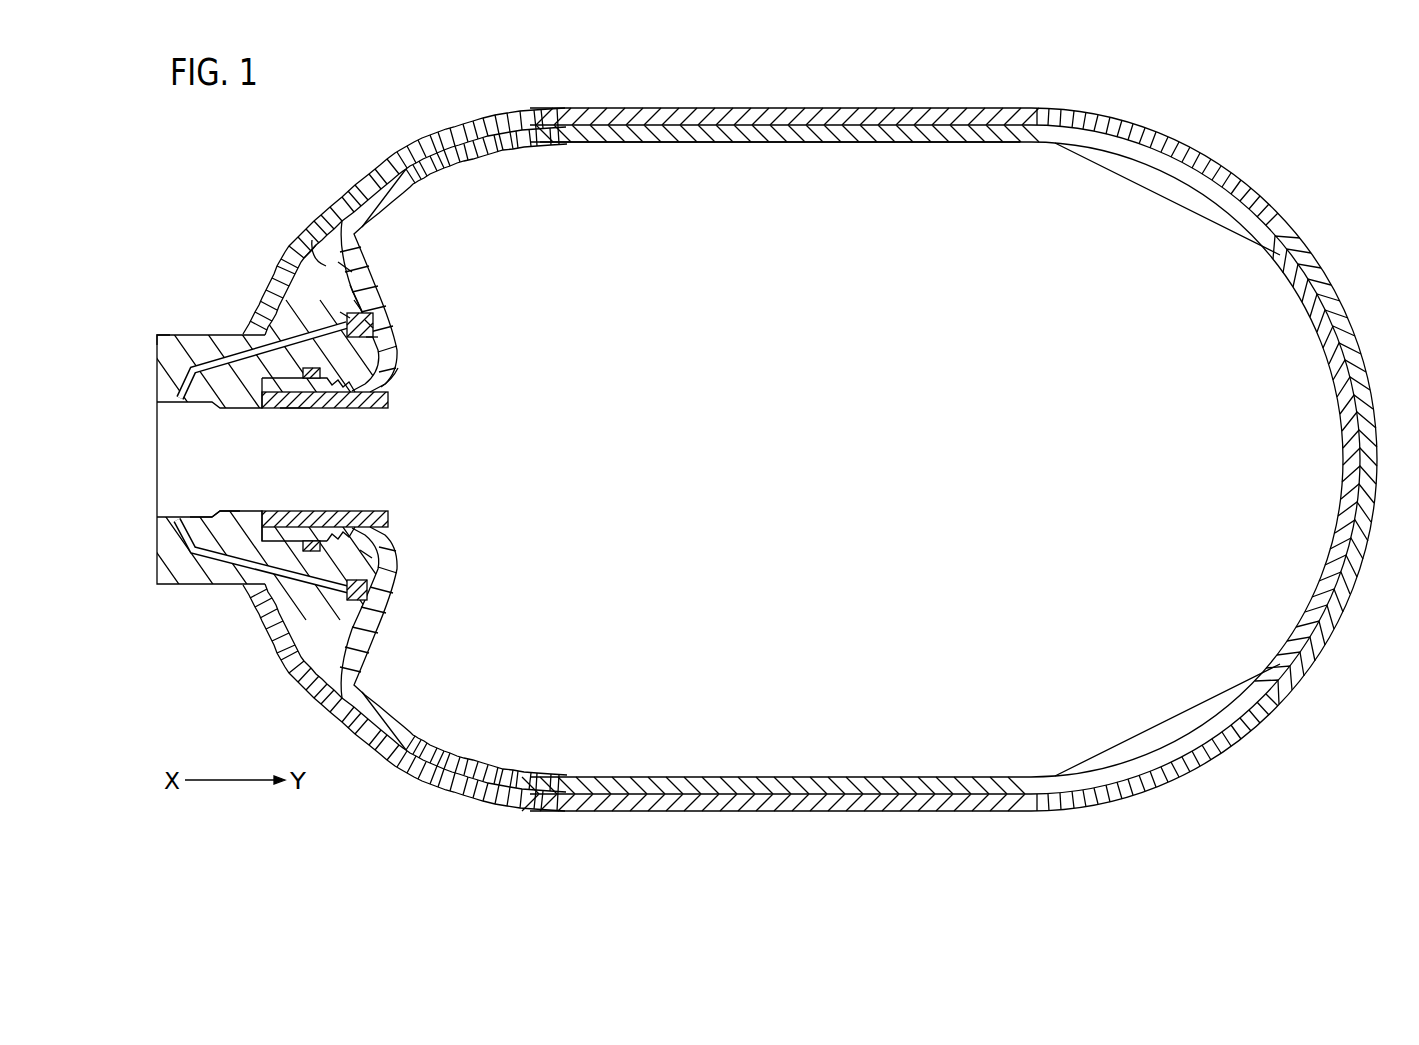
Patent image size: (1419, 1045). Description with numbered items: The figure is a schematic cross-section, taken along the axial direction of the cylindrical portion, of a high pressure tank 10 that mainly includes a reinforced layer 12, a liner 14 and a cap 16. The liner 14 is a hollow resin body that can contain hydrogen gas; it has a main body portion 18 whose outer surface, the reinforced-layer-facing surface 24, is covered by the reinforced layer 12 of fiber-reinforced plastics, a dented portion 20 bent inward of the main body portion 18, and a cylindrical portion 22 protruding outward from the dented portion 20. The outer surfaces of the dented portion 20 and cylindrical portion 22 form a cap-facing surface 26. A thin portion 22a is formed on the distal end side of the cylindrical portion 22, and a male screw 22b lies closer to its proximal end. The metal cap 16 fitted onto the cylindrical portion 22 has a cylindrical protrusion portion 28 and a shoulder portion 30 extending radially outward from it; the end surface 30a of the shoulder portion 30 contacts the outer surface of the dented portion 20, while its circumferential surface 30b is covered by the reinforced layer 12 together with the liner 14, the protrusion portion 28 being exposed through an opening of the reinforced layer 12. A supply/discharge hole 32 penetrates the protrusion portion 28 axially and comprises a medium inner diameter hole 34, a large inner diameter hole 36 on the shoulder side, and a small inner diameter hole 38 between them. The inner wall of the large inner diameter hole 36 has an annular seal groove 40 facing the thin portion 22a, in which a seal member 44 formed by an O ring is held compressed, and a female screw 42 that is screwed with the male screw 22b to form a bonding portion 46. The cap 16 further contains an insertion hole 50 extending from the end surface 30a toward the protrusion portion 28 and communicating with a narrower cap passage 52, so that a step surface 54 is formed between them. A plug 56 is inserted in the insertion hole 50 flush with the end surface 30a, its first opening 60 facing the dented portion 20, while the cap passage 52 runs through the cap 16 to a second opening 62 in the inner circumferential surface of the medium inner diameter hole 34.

The high pressure tank 10 is at (1285, 102).
The reinforced layer 12 is at (1133, 140).
The liner 14 is at (1126, 152).
The cap 16 is at (192, 290).
The main body portion 18 is at (793, 143).
The dented portion 20 is at (345, 267).
The cylindrical portion 22 is at (333, 400).
The thin portion 22a is at (293, 392).
The male screw 22b is at (393, 367).
The reinforced-layer-facing surface 24 is at (768, 122).
The cap-facing surface 26 is at (313, 236).
The protrusion portion 28 is at (200, 345).
The shoulder portion 30 is at (300, 270).
The end surface 30a is at (357, 265).
The circumferential surface 30b is at (302, 238).
The supply/discharge hole 32 is at (295, 467).
The medium inner diameter hole 34 is at (204, 512).
The large inner diameter hole 36 is at (272, 538).
The small inner diameter hole 38 is at (238, 510).
The seal groove 40 is at (315, 541).
The female screw 42 is at (355, 535).
The seal member 44 is at (300, 548).
The bonding portion 46 is at (370, 554).
The insertion hole 50 is at (372, 313).
The cap passage 52 is at (167, 335).
The step surface 54 is at (375, 334).
The plug 56 is at (347, 310).
The first opening 60 is at (373, 323).
The second opening 62 is at (178, 404).